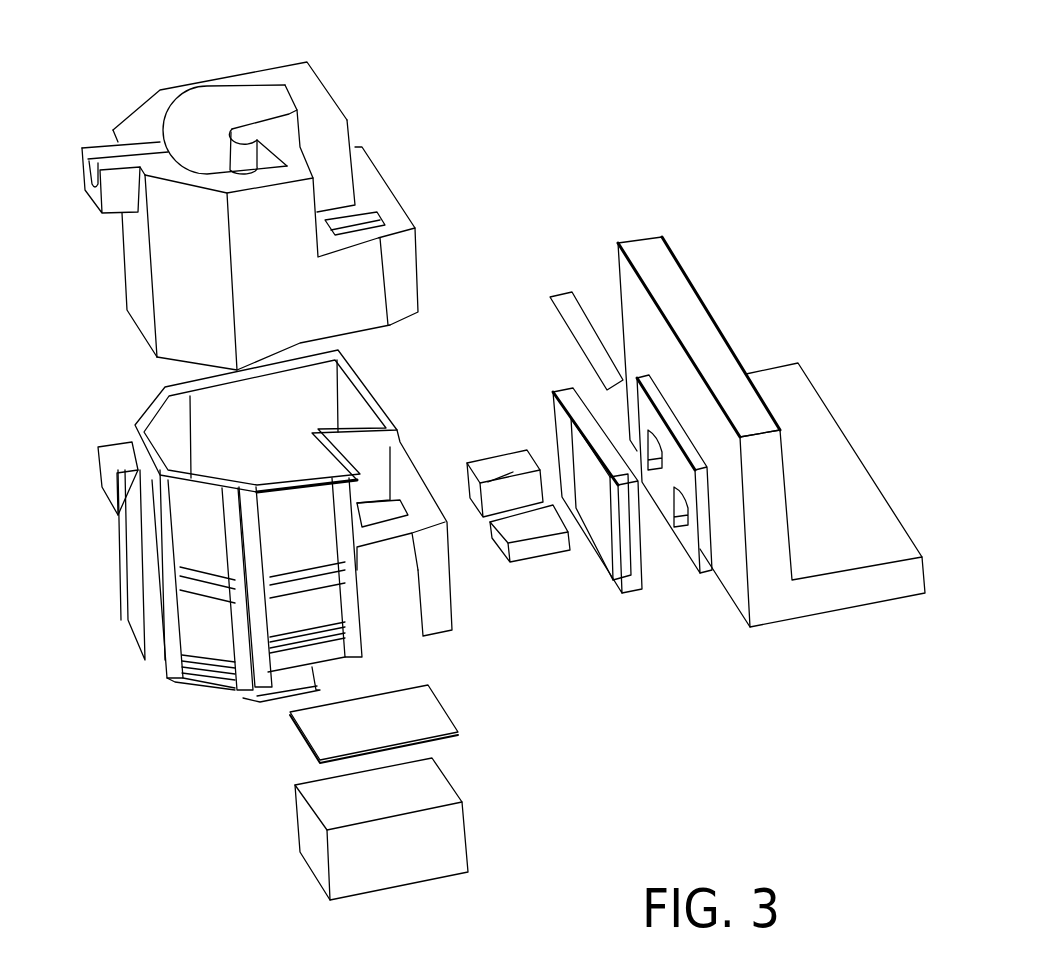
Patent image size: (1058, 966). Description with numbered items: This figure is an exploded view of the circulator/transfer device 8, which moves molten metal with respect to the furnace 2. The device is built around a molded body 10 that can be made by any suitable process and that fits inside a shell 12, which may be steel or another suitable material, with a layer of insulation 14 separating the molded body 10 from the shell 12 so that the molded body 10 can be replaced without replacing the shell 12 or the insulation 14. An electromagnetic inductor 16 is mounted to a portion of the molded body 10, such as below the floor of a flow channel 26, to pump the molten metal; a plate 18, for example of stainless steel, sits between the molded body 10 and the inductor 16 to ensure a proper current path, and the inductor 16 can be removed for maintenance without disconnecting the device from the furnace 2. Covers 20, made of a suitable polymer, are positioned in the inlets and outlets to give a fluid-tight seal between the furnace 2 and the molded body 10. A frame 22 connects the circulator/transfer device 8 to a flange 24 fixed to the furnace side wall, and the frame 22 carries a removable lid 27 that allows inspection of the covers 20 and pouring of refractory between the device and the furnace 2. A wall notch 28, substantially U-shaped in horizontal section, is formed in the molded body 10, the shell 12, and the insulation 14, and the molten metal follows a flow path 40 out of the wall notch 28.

The furnace 2 is at (801, 357).
The circulator/transfer device 8 is at (133, 90).
The molded body 10 is at (335, 83).
The shell 12 is at (150, 400).
The layer of insulation 14 is at (272, 419).
The electromagnetic inductor 16 is at (315, 858).
The plate 18 is at (303, 737).
The covers 20 is at (547, 563).
The frame 22 is at (643, 593).
The flange 24 is at (663, 405).
The flow channel 26 is at (205, 118).
The removable lid 27 is at (568, 305).
The wall notch 28 is at (88, 168).
The flow path 40 is at (680, 255).